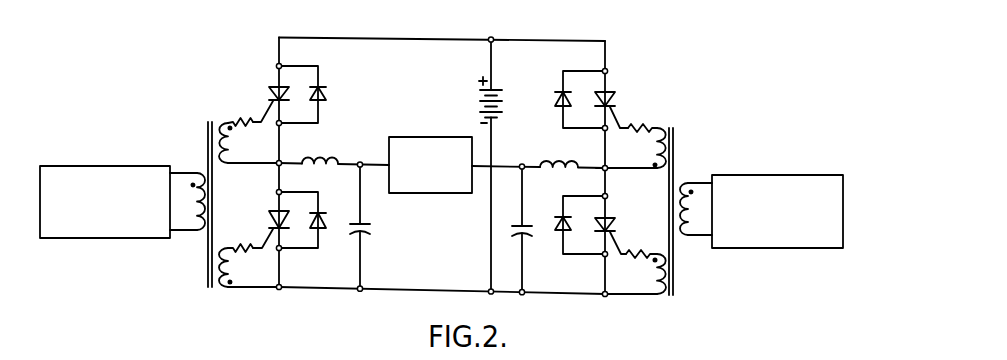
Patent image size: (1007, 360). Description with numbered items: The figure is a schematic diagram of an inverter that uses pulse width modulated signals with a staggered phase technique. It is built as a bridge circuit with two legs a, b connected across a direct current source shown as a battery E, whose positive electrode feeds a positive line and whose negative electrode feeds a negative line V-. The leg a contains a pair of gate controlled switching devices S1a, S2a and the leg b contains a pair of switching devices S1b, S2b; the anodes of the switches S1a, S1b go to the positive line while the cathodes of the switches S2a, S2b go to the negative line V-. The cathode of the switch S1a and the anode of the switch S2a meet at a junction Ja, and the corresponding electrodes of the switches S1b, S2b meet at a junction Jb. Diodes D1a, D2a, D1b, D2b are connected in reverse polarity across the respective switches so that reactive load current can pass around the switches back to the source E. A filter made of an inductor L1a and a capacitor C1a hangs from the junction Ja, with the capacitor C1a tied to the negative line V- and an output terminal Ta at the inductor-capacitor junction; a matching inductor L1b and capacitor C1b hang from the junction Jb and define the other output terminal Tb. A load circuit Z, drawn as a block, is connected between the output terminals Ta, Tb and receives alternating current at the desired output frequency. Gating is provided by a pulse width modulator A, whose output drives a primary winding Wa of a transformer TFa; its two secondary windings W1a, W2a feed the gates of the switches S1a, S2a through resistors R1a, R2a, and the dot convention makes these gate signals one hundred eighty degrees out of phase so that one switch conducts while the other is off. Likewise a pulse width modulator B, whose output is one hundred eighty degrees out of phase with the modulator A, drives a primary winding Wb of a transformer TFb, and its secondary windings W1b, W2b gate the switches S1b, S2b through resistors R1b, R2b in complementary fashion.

The leg a is at (288, 30).
The leg b is at (610, 34).
The negative line V- is at (456, 292).
The battery E is at (478, 104).
The load circuit Z is at (421, 137).
The pulse width modulator A is at (88, 165).
The pulse width modulator B is at (757, 175).
The transformer TFa is at (205, 125).
The transformer TFb is at (715, 120).
The primary winding Wa is at (200, 172).
The primary winding Wb is at (684, 184).
The secondary winding W1a is at (222, 145).
The secondary winding W2a is at (222, 262).
The secondary winding W1b is at (653, 147).
The secondary winding W2b is at (656, 279).
The resistor R1a is at (248, 113).
The resistor R2a is at (240, 245).
The resistor R1b is at (629, 123).
The resistor R2b is at (621, 251).
The switching device S1a is at (270, 92).
The switching device S2a is at (268, 220).
The switching device S1b is at (614, 103).
The switching device S2b is at (615, 222).
The diode D1a is at (328, 97).
The diode D2a is at (325, 220).
The diode D1b is at (554, 101).
The diode D2b is at (555, 220).
The inductor L1a is at (306, 163).
The inductor L1b is at (556, 171).
The capacitor C1a is at (371, 230).
The capacitor C1b is at (533, 238).
The junction Ja is at (282, 161).
The junction Jb is at (602, 166).
The output terminal Ta is at (360, 163).
The output terminal Tb is at (523, 164).